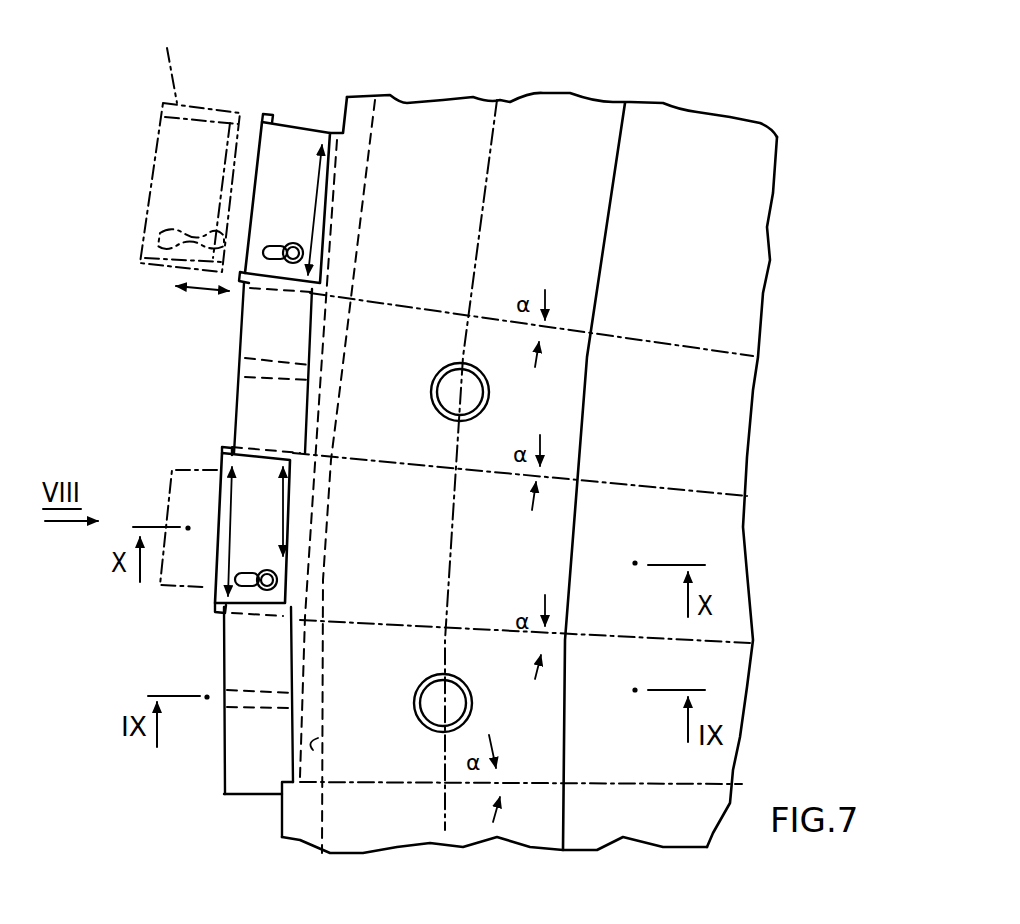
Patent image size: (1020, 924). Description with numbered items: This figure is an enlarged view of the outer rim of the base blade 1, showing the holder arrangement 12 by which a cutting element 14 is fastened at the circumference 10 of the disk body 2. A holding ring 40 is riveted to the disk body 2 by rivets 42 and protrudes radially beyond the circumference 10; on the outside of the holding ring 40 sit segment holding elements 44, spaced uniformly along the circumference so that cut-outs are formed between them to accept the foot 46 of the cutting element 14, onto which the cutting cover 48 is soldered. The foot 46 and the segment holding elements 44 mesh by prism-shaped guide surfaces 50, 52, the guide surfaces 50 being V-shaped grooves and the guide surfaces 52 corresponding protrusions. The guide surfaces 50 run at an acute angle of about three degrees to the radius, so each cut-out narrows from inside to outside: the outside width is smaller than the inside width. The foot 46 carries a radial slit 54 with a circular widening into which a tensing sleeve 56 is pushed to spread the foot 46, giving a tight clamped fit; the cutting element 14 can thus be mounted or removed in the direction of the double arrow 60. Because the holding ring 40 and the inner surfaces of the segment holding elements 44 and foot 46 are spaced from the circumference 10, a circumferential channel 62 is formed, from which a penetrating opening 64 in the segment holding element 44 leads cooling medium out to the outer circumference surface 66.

The base blade 1 is at (529, 431).
The disk body 2 is at (669, 424).
The circumference 10 is at (314, 750).
The holder arrangement 12 is at (260, 809).
The cutting element 14 is at (260, 122).
The holding ring 40 is at (557, 117).
The rivet 42 is at (478, 390).
The segment holding element 44 is at (271, 334).
The foot 46 is at (345, 492).
The cutting cover 48 is at (172, 470).
The guide surface of segment holding element 50 is at (233, 797).
The guide surface of foot 52 is at (277, 118).
The radial slit 54 is at (284, 244).
The tensing sleeve 56 is at (307, 243).
The double arrow 60 is at (203, 288).
The channel 62 is at (323, 397).
The penetrating opening 64 is at (255, 363).
The outer circumference surface 66 is at (240, 411).